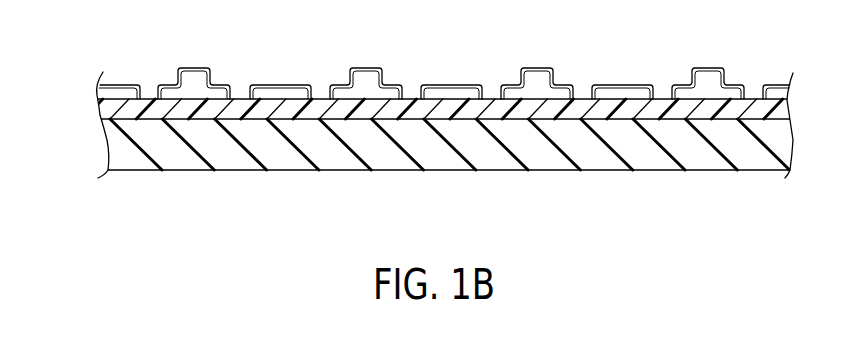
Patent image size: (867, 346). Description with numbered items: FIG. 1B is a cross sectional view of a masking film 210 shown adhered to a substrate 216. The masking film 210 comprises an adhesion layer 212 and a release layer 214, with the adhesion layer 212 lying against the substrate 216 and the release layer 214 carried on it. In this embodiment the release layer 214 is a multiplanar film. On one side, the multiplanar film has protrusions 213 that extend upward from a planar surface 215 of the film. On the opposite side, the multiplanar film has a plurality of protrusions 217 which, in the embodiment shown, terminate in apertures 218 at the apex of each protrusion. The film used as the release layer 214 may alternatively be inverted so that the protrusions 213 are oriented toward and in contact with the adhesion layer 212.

The masking film 210 is at (90, 72).
The adhesion layer 212 is at (415, 102).
The protrusions 213 is at (193, 66).
The release layer 214 is at (560, 92).
The planar surface 215 is at (622, 84).
The substrate 216 is at (215, 160).
The protrusions 217 is at (603, 96).
The apertures 218 is at (492, 92).